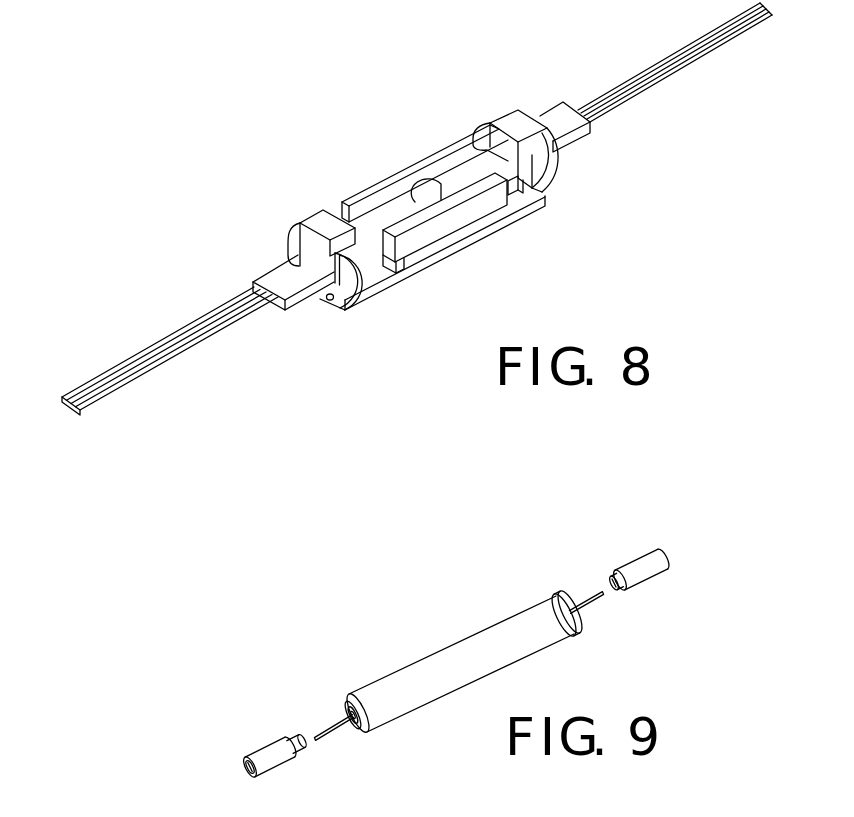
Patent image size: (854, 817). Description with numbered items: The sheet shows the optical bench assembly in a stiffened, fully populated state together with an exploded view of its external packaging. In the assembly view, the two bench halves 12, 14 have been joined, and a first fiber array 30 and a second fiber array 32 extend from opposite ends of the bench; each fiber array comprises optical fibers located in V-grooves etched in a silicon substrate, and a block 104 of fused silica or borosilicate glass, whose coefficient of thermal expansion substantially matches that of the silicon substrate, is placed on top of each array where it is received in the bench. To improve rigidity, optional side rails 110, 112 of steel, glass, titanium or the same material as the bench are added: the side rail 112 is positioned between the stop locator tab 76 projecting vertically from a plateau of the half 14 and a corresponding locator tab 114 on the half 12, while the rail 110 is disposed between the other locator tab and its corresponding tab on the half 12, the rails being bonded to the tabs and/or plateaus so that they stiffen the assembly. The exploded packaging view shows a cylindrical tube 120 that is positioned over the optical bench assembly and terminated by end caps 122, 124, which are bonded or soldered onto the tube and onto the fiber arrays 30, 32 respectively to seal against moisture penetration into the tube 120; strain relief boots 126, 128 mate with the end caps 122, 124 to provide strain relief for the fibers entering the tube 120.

In FIG. 8, the half 12 is at (369, 307).
In FIG. 8, the half 14 is at (563, 196).
In FIG. 8, the fiber array 30 is at (153, 328).
In FIG. 9, the fiber array 30 is at (326, 729).
In FIG. 8, the fiber array 32 is at (603, 79).
In FIG. 9, the fiber array 32 is at (587, 588).
In FIG. 8, the stop locator tab 76 is at (515, 203).
In FIG. 8, the block 104 is at (517, 118).
In FIG. 8, the side rail 110 is at (387, 177).
In FIG. 8, the side rail 112 is at (453, 225).
In FIG. 8, the locator tab 114 is at (394, 275).
In FIG. 9, the cylindrical tube 120 is at (418, 658).
In FIG. 9, the end cap 122 is at (349, 700).
In FIG. 9, the end cap 124 is at (556, 596).
In FIG. 9, the strain relief boot 126 is at (189, 690).
In FIG. 9, the strain relief boot 128 is at (657, 546).